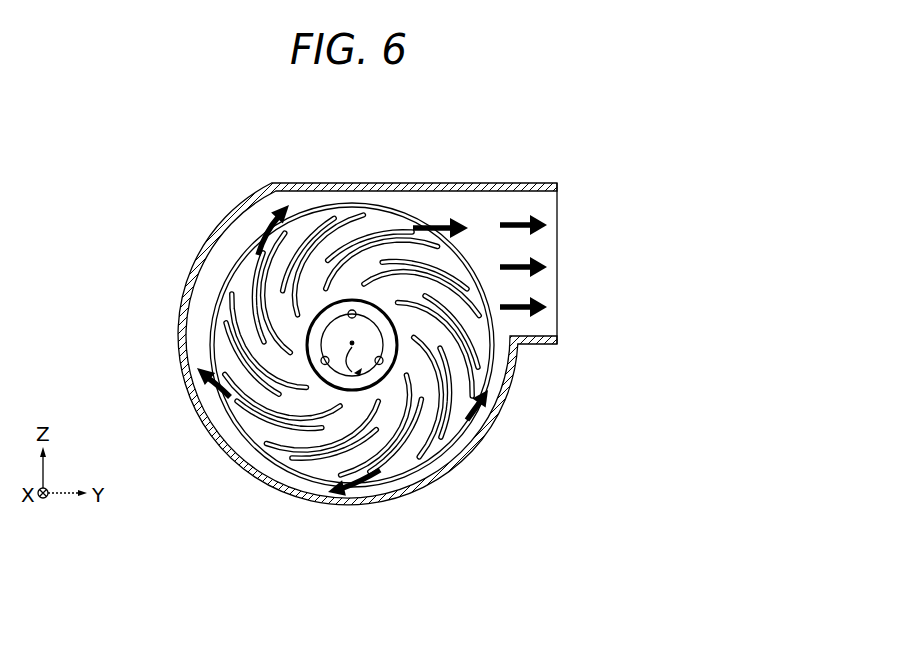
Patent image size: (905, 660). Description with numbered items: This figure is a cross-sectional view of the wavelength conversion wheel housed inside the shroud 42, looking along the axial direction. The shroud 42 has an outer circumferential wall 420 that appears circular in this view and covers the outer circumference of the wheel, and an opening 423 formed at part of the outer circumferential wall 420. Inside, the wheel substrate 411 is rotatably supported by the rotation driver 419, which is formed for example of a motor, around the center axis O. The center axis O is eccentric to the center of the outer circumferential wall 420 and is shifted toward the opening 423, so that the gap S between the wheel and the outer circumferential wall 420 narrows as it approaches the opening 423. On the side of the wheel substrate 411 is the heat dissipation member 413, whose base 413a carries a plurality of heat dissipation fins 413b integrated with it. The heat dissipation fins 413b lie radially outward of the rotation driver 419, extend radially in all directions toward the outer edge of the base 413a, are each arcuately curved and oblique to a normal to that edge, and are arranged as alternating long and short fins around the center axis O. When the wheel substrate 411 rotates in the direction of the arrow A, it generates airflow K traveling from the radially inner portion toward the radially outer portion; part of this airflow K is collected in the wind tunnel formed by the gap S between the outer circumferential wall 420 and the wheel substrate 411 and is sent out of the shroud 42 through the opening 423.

The shroud 42 is at (402, 347).
The outer circumferential wall 420 is at (287, 183).
The opening 423 is at (557, 205).
The wheel substrate 411 is at (352, 360).
The heat dissipation member 413 is at (347, 417).
The base 413a is at (302, 405).
The heat dissipation fins 413b is at (332, 428).
The rotation driver 419 is at (377, 373).
The airflow K is at (440, 222).
The gap S is at (214, 414).
The arrow indicating rotation direction A is at (330, 333).
The center axis O is at (352, 345).